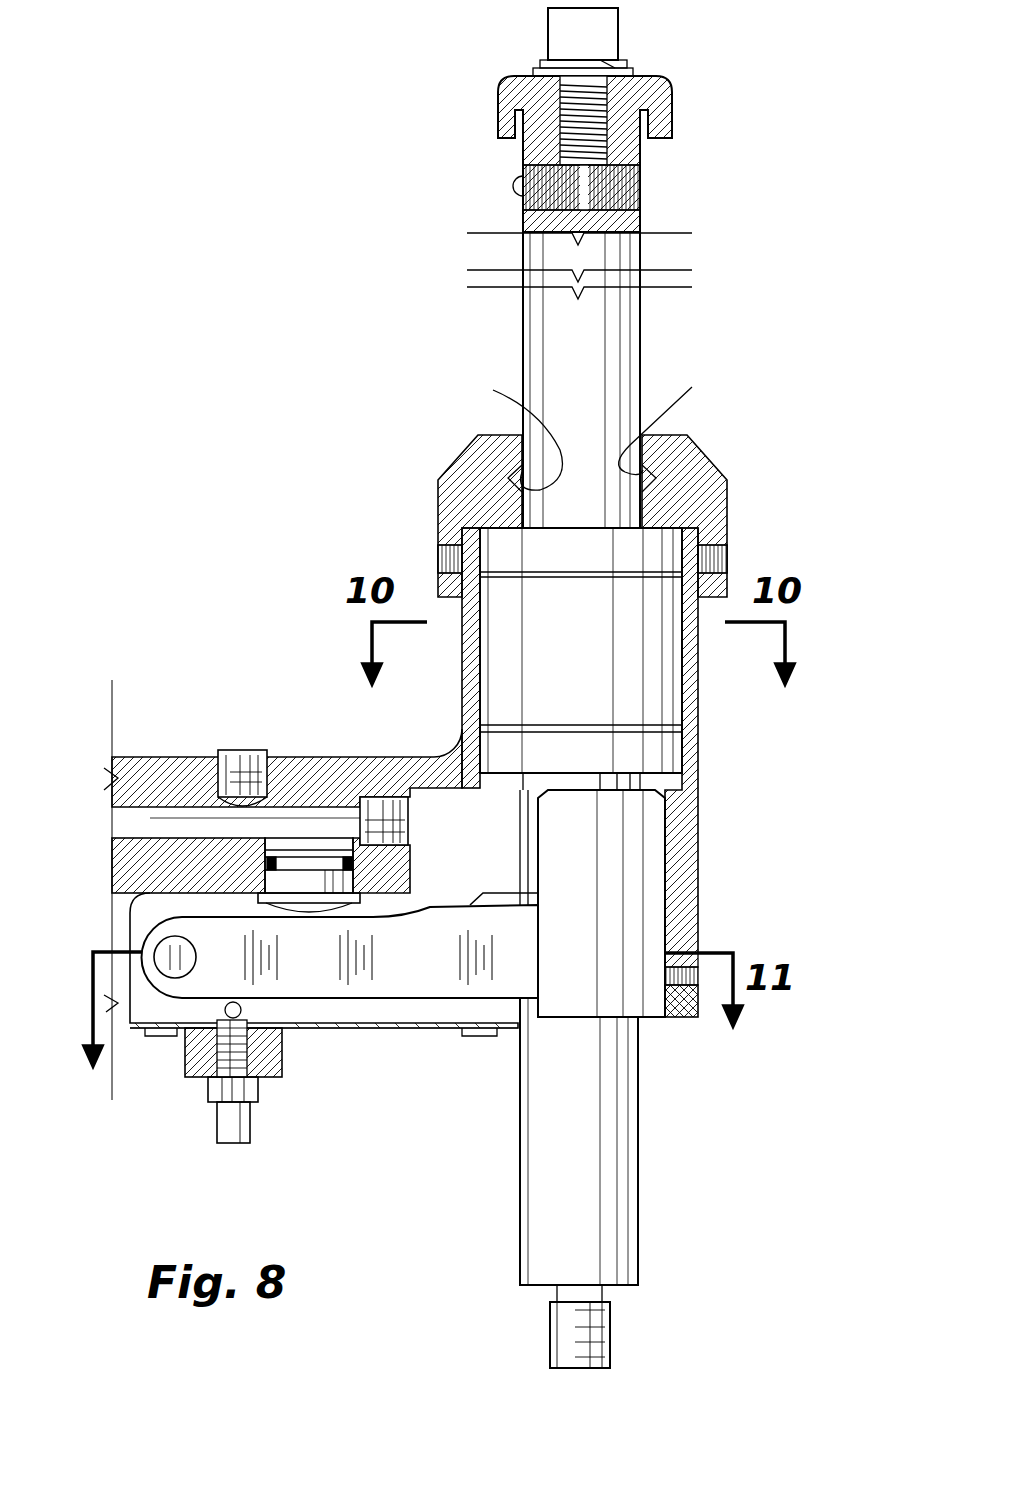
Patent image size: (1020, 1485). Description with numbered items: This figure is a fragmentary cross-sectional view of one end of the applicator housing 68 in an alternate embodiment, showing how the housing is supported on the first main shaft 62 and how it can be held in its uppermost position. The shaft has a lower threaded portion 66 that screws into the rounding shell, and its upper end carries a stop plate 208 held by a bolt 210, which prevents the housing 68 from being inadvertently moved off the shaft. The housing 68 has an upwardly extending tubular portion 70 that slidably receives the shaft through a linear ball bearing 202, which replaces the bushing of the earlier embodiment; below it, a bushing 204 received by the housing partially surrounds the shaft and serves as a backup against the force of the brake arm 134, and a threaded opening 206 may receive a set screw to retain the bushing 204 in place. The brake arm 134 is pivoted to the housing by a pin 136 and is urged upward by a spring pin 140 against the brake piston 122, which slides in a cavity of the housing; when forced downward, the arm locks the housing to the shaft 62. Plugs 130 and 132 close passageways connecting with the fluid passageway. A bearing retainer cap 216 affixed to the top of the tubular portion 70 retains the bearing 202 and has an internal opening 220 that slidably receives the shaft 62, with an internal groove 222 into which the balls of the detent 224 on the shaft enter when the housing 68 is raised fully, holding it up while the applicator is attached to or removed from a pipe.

The first main shaft 62 is at (540, 357).
The lower threaded portion 66 is at (565, 1325).
The applicator housing 68 is at (178, 772).
The tubular portion 70 is at (473, 690).
The brake piston 122 is at (285, 880).
The plug 130 is at (245, 757).
The plug 132 is at (388, 800).
The brake arm 134 is at (357, 985).
The pin 136 is at (175, 965).
The spring pin 140 is at (245, 1015).
The linear ball bearing 202 is at (625, 682).
The bushing 204 is at (640, 835).
The threaded opening 206 is at (698, 1020).
The stop plate 208 is at (510, 97).
The bolt 210 is at (558, 20).
The bearing retainer cap 216 is at (698, 482).
The internal opening 220 is at (503, 434).
The internal groove 222 is at (682, 424).
The detent 224 is at (516, 186).